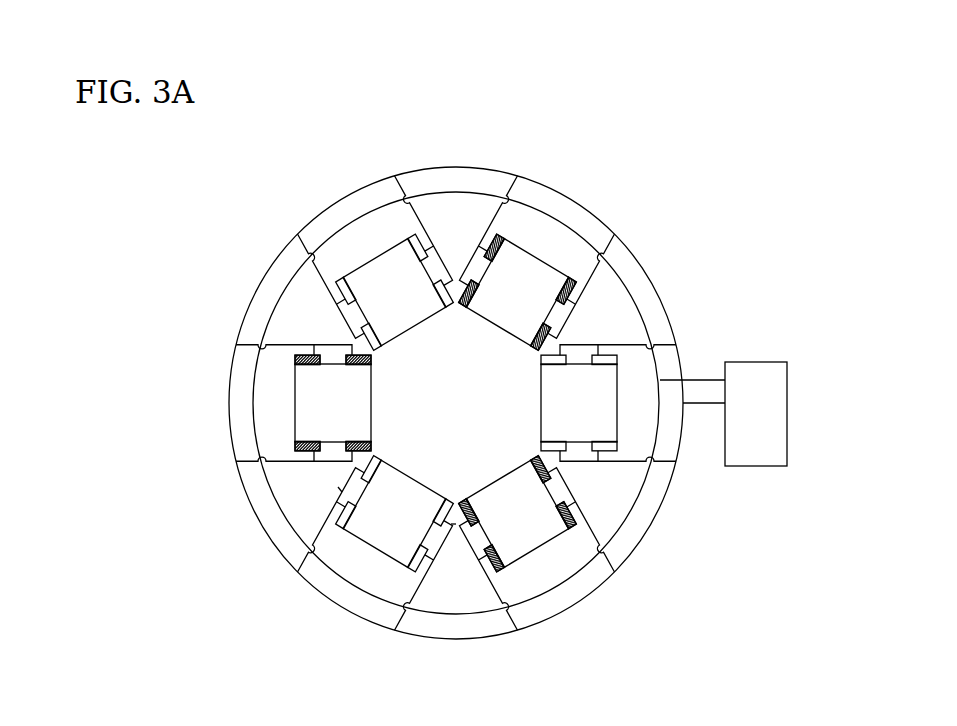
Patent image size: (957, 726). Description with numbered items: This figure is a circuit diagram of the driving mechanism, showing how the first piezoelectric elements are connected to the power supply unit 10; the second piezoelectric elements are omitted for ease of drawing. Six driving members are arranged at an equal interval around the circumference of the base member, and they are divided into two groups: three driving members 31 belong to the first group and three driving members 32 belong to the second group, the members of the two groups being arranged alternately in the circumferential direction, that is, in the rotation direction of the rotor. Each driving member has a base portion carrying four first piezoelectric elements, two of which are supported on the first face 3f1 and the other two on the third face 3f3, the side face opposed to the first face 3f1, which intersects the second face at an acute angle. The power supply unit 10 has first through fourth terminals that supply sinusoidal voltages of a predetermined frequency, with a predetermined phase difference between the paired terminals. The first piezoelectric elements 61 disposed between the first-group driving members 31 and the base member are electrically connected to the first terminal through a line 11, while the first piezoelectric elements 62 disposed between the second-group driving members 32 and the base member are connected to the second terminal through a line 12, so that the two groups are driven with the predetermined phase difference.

The power supply unit 10 is at (770, 362).
The line 11 is at (640, 304).
The line 12 is at (638, 531).
The driving member 31 is at (540, 256).
The driving member 32 is at (365, 251).
The first piezoelectric element 61 is at (490, 246).
The first piezoelectric element 62 is at (356, 464).
The first face 3f1 is at (330, 489).
The third face 3f3 is at (452, 530).